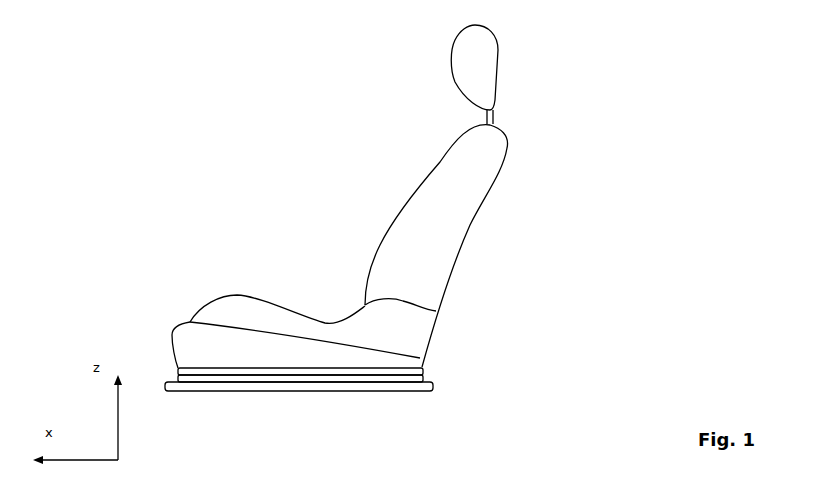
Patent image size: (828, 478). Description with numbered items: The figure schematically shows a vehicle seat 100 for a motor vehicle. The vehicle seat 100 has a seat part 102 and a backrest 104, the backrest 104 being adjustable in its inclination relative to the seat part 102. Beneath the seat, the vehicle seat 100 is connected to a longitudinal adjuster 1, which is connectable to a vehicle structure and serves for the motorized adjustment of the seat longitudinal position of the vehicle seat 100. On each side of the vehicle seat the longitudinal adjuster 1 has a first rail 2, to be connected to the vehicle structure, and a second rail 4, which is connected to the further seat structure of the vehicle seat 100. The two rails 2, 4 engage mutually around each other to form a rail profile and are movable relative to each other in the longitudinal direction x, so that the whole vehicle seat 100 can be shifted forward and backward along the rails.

The vehicle seat 100 is at (351, 213).
The seat part 102 is at (291, 321).
The backrest 104 is at (438, 189).
The longitudinal adjuster 1 is at (352, 358).
The first rail 2 is at (424, 388).
The second rail 4 is at (423, 367).